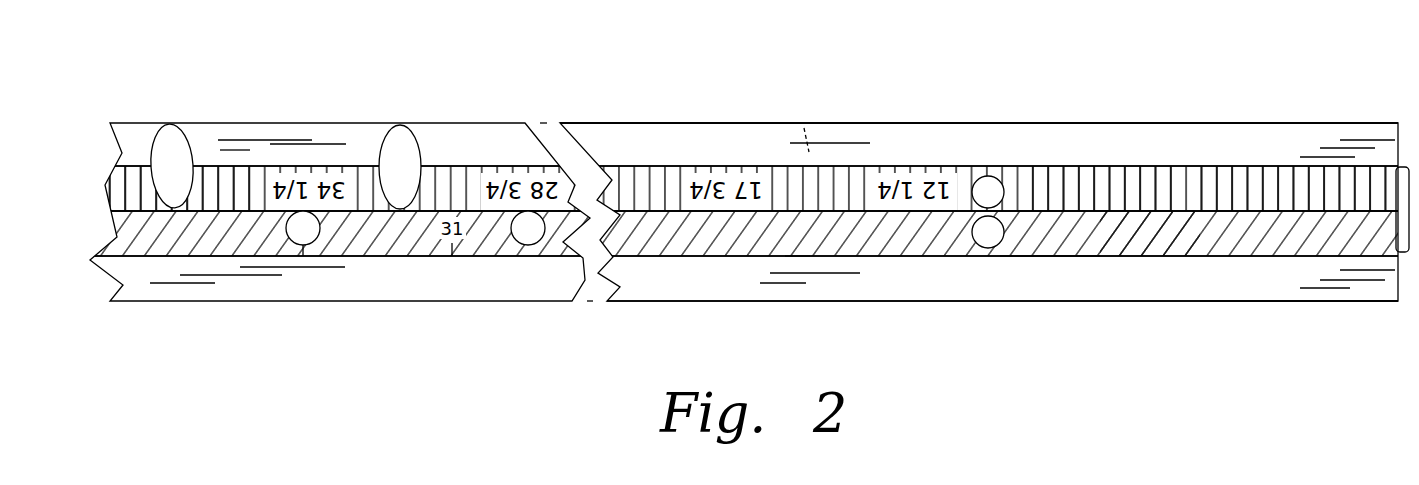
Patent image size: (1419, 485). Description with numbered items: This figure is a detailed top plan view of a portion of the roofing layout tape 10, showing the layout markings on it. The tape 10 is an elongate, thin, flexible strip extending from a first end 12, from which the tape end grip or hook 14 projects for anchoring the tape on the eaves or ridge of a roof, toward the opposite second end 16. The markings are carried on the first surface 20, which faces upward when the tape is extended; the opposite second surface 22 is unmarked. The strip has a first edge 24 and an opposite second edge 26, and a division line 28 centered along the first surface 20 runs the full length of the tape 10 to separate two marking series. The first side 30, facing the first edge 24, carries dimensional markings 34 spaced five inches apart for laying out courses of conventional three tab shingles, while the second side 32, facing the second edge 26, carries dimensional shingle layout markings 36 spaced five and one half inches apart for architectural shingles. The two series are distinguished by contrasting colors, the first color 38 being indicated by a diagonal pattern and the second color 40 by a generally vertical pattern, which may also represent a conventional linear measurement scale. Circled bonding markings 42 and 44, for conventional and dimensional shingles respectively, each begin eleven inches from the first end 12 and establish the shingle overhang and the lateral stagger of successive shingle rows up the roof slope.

The roofing layout tape 10 is at (974, 341).
The first end 12 is at (1299, 338).
The tape end grip or hook 14 is at (1398, 187).
The second end 16 is at (797, 256).
The first surface 20 is at (851, 149).
The second surface 22 is at (790, 105).
The first edge 24 is at (1002, 331).
The second edge 26 is at (979, 92).
The division line 28 is at (744, 280).
The first side 30 is at (1150, 281).
The second side 32 is at (744, 137).
The dimensional markings 34 is at (744, 280).
The dimensional shingle layout markings 36 is at (744, 135).
The first color 38 is at (1050, 299).
The second color 40 is at (1105, 142).
The bonding markings 42 is at (744, 302).
The bonding markings 44 is at (583, 156).